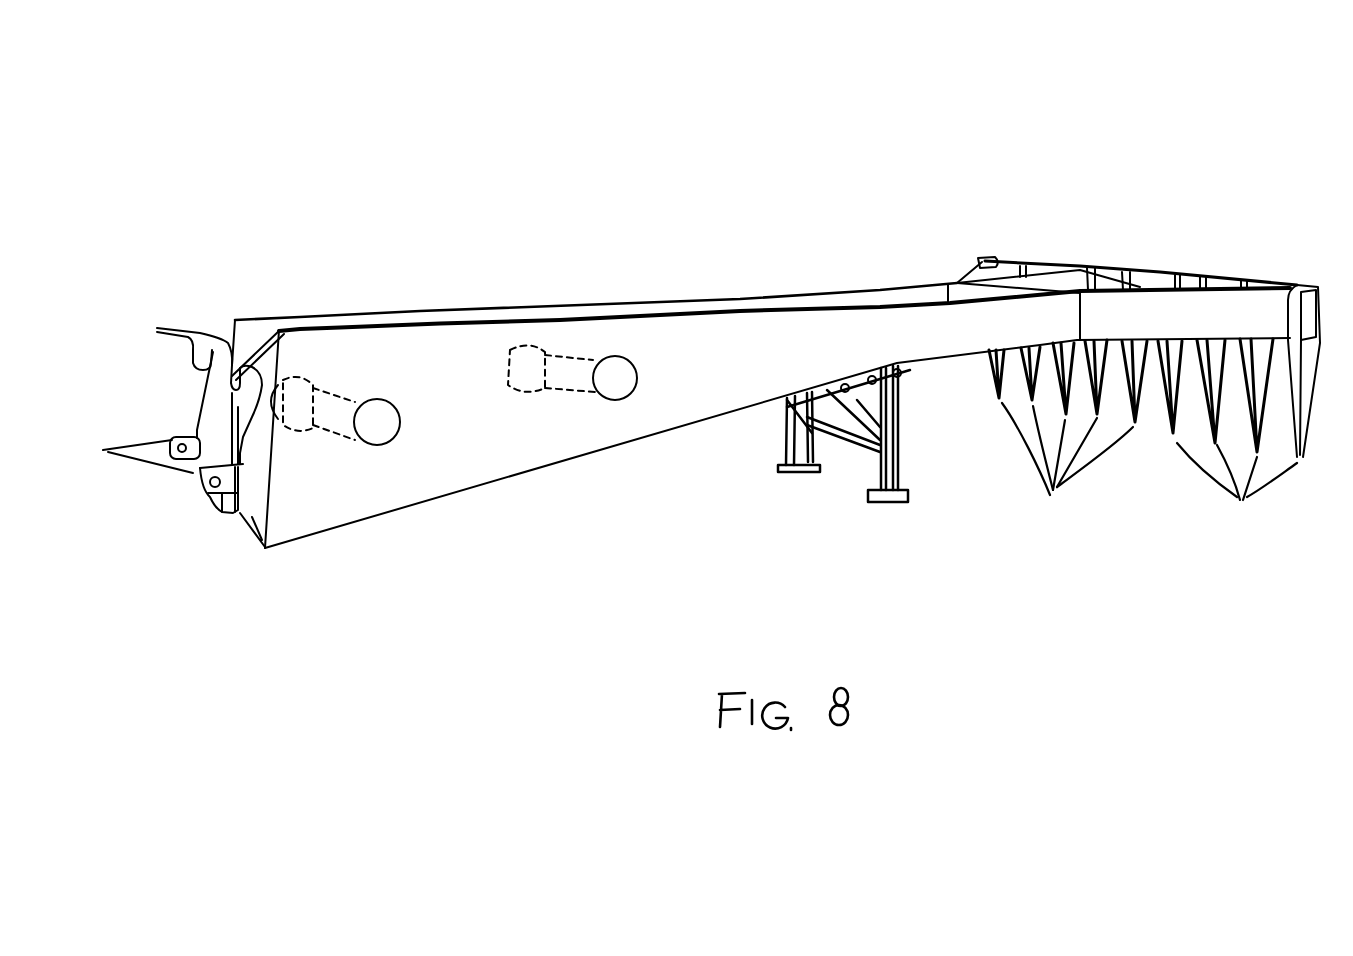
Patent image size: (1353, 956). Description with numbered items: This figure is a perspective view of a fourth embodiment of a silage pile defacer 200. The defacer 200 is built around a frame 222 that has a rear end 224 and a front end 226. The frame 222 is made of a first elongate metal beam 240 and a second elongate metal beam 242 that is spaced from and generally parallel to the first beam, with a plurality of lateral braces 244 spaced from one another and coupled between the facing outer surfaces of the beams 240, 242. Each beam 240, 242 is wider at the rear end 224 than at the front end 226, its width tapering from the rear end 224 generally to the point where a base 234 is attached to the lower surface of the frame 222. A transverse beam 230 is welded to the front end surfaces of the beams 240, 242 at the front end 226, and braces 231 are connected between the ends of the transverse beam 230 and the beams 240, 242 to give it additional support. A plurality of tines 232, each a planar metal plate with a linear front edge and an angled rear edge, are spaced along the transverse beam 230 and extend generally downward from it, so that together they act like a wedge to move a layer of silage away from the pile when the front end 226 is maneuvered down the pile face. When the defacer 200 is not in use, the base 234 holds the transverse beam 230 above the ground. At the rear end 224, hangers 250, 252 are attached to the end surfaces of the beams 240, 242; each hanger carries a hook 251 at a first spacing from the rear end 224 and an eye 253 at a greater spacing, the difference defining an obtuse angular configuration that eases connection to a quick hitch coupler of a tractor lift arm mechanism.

The silage pile defacer 200 is at (848, 163).
The frame 222 is at (634, 296).
The rear end 224 is at (235, 320).
The front end 226 is at (1083, 267).
The transverse beam 230 is at (1147, 267).
The braces 231 is at (990, 260).
The tines 232 is at (1143, 442).
The base 234 is at (910, 430).
The first elongate metal beam 240 is at (583, 443).
The second elongate metal beam 242 is at (448, 310).
The lateral braces 244 is at (340, 392).
The hanger 250 is at (252, 537).
The hook 251 is at (149, 331).
The hanger 252 is at (213, 502).
The eye 253 is at (121, 448).